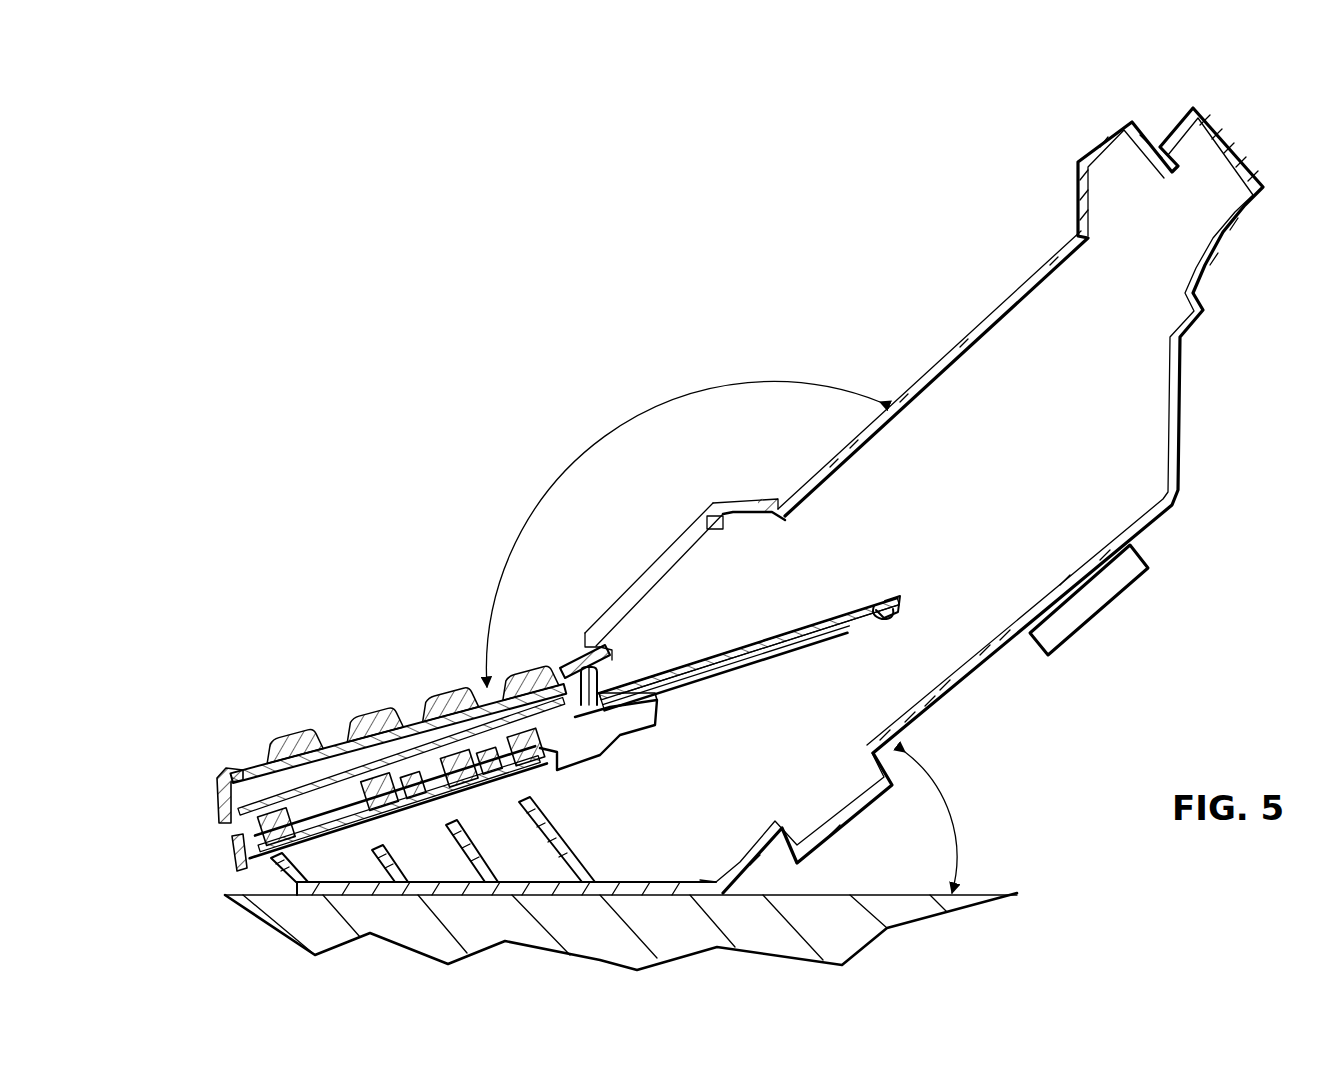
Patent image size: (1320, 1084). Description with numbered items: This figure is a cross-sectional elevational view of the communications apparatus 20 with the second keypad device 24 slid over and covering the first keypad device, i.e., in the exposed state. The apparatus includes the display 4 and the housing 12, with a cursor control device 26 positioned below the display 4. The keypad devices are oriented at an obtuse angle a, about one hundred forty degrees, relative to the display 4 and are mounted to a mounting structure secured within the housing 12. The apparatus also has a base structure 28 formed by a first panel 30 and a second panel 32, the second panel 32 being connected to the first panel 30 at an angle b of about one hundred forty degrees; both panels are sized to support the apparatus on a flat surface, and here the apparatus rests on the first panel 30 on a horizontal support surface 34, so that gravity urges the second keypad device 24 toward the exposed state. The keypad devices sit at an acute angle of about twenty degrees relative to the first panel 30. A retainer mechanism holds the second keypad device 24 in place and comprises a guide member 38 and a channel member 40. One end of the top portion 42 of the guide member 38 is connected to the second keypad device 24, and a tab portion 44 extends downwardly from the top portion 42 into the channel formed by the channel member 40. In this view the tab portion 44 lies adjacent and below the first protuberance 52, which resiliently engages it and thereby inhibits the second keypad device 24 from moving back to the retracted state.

The communications apparatus 20 is at (975, 262).
The display 4 is at (957, 338).
The housing 12 is at (757, 497).
The cursor control device 26 is at (636, 572).
The top portion 42 is at (572, 660).
The guide member 38 is at (600, 650).
The tab portion 44 is at (603, 682).
The channel member 40 is at (837, 620).
The first protuberance 52 is at (615, 707).
The second keypad device 24 is at (333, 745).
The horizontal support surface 34 is at (243, 893).
The first panel 30 is at (650, 882).
The base structure 28 is at (930, 706).
The second panel 32 is at (1010, 652).
The obtuse angle a is at (548, 484).
The angle between panels b is at (947, 808).